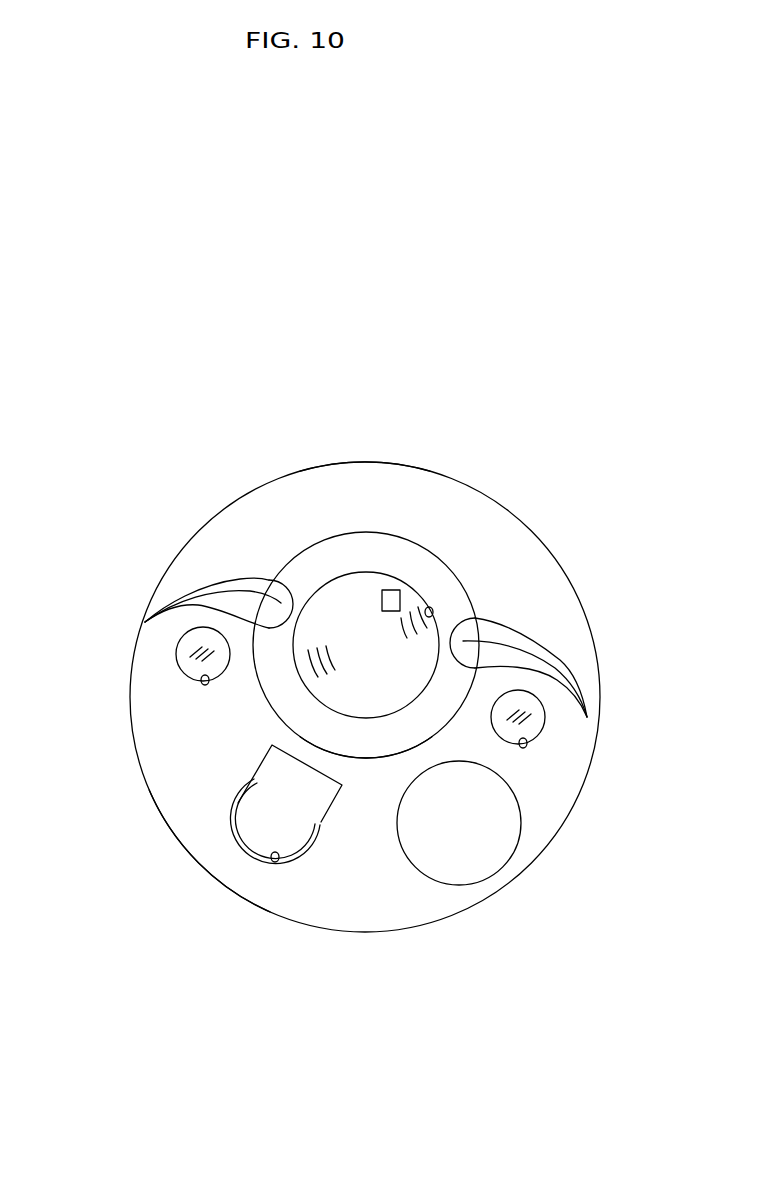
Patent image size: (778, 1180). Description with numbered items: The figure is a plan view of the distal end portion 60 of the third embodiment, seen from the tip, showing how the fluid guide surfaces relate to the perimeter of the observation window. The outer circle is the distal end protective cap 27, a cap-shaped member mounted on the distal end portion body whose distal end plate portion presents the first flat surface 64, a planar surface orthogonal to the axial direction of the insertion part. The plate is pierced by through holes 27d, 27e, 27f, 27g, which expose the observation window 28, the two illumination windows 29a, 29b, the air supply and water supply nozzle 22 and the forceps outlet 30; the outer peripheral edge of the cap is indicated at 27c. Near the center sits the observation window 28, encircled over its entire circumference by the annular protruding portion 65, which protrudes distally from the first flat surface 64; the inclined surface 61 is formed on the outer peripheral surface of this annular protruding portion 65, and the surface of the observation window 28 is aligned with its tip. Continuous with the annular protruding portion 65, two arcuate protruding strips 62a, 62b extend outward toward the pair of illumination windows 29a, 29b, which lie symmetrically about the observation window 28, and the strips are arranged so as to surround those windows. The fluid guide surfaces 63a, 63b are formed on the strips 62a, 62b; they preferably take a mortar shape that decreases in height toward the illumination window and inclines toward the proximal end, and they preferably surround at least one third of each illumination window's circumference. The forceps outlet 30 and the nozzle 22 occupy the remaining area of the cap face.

The distal end portion 60 is at (538, 347).
The distal end protective cap 27 is at (277, 917).
The outer peripheral edge 27c is at (398, 462).
The through hole 27d is at (430, 607).
The through hole 27e is at (206, 684).
The through hole 27f is at (526, 746).
The through hole 27g is at (276, 862).
The observation window 28 is at (350, 622).
The annular protruding portion 65 is at (313, 557).
The inclined surface 61 is at (358, 740).
The arcuate protruding strip 62a is at (204, 584).
The arcuate protruding strip 62b is at (548, 648).
The fluid guide surface 63a is at (250, 606).
The fluid guide surface 63b is at (507, 652).
The illumination window 29a is at (192, 667).
The illumination window 29b is at (535, 707).
The forceps outlet 30 is at (480, 862).
The air supply and water supply nozzle 22 is at (260, 812).
The first flat surface 64 is at (208, 827).